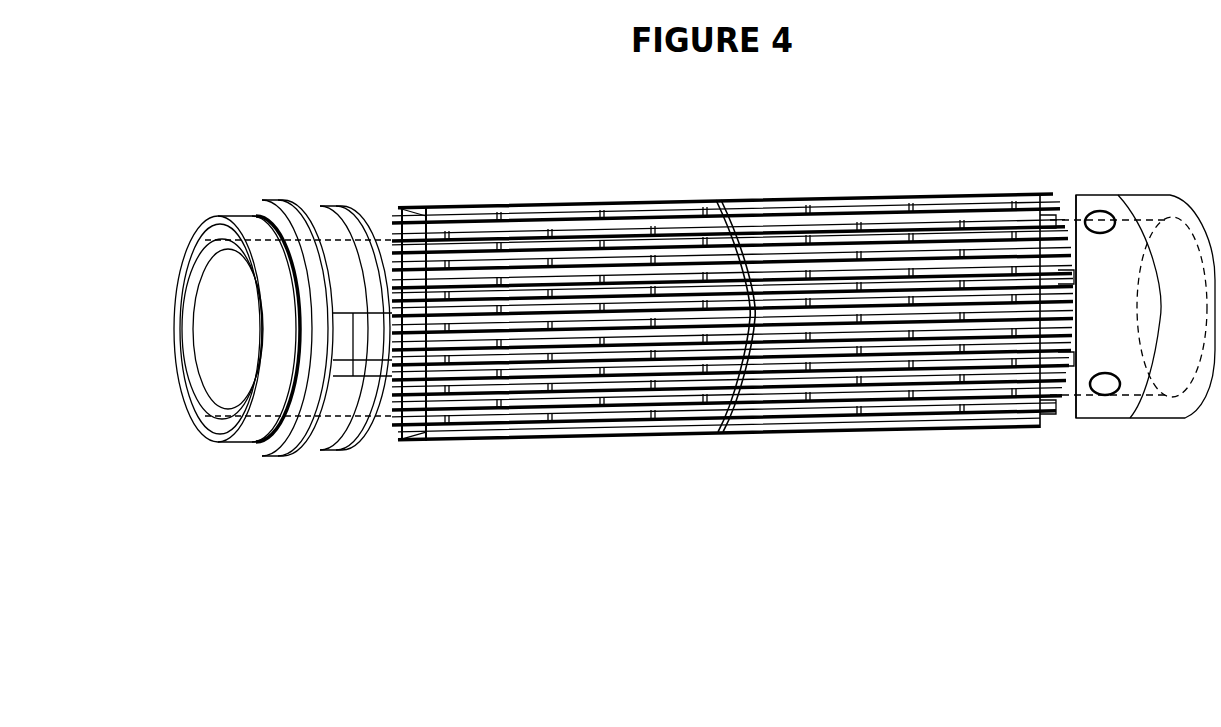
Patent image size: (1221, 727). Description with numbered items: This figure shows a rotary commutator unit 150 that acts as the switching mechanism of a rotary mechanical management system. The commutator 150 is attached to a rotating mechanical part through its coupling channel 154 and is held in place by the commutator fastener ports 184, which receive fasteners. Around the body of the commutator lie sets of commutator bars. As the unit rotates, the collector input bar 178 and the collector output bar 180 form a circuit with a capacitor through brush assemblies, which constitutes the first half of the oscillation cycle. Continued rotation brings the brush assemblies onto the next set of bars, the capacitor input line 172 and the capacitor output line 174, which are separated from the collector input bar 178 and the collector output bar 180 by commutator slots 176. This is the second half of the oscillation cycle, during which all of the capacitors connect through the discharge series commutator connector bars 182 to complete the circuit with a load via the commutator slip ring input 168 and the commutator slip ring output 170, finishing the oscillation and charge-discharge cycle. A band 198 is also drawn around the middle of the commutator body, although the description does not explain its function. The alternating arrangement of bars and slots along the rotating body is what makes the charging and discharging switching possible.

The rotary commutator unit 150 is at (205, 230).
The coupling channel 154 is at (222, 343).
The commutator slip ring input 168 is at (272, 215).
The commutator slip ring output 170 is at (322, 202).
The capacitor input line 172 is at (430, 327).
The capacitor output line 174 is at (477, 363).
The commutator slots 176 is at (545, 375).
The collector input bar 178 is at (636, 380).
The band 198 is at (807, 355).
The collector output bar 180 is at (903, 370).
The discharge series commutator connector bars 182 is at (1043, 430).
The commutator fastener ports 184 is at (1104, 214).